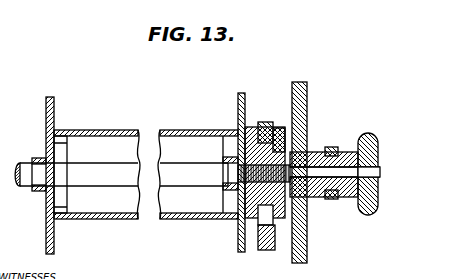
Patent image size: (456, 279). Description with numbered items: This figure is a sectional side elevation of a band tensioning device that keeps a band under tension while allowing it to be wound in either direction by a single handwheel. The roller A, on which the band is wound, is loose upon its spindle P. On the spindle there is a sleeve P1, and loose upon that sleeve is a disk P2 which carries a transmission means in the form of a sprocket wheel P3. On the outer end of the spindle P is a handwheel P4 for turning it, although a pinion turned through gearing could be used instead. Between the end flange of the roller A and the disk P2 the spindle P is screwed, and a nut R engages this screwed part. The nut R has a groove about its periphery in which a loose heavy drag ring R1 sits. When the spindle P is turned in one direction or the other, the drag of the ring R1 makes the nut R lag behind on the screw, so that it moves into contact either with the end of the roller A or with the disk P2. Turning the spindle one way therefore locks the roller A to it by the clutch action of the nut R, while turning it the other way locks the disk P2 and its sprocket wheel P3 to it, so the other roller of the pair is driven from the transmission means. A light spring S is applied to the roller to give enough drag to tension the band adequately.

The roller A is at (213, 130).
The spindle P is at (121, 174).
The light spring S is at (241, 93).
The nut R is at (253, 127).
The drag ring R1 is at (265, 252).
The sleeve P1 is at (334, 194).
The disk P2 is at (298, 90).
The sprocket wheel P3 is at (312, 148).
The handwheel P4 is at (367, 150).